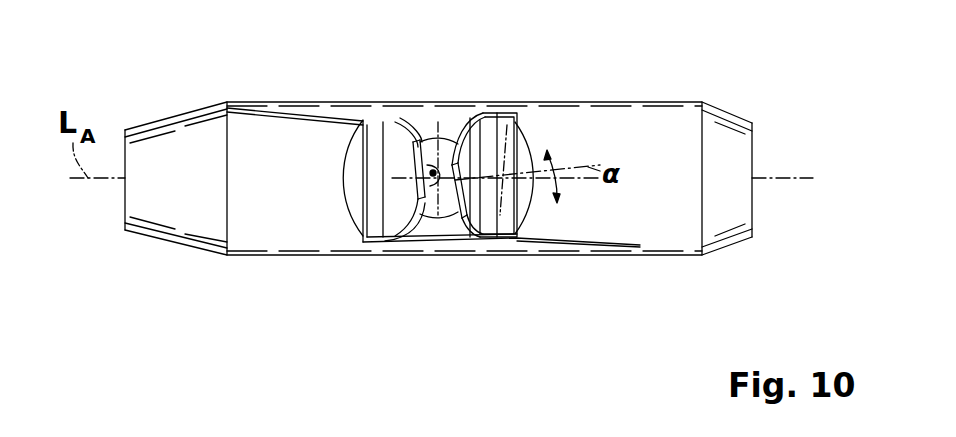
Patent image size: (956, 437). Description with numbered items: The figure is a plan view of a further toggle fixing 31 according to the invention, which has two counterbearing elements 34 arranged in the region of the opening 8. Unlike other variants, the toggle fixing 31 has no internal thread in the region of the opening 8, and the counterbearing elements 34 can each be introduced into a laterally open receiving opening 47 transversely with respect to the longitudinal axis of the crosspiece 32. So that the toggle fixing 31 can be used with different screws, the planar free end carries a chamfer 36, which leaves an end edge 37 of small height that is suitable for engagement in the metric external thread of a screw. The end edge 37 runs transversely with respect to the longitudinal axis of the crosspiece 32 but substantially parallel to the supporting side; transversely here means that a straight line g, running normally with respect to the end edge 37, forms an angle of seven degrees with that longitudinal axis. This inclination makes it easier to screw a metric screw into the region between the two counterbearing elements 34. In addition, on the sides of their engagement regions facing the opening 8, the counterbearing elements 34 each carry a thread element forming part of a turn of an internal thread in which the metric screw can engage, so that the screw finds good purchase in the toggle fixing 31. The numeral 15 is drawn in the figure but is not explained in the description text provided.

The toggle fixing 31 is at (760, 76).
The crosspiece 32 is at (251, 137).
The receiving opening 47 is at (290, 103).
The ball 15 is at (403, 163).
The end edge 37 is at (437, 145).
The opening 8 is at (433, 207).
The chamfer 36 is at (417, 185).
The counterbearing element 34 is at (388, 185).
The straight line g is at (510, 113).